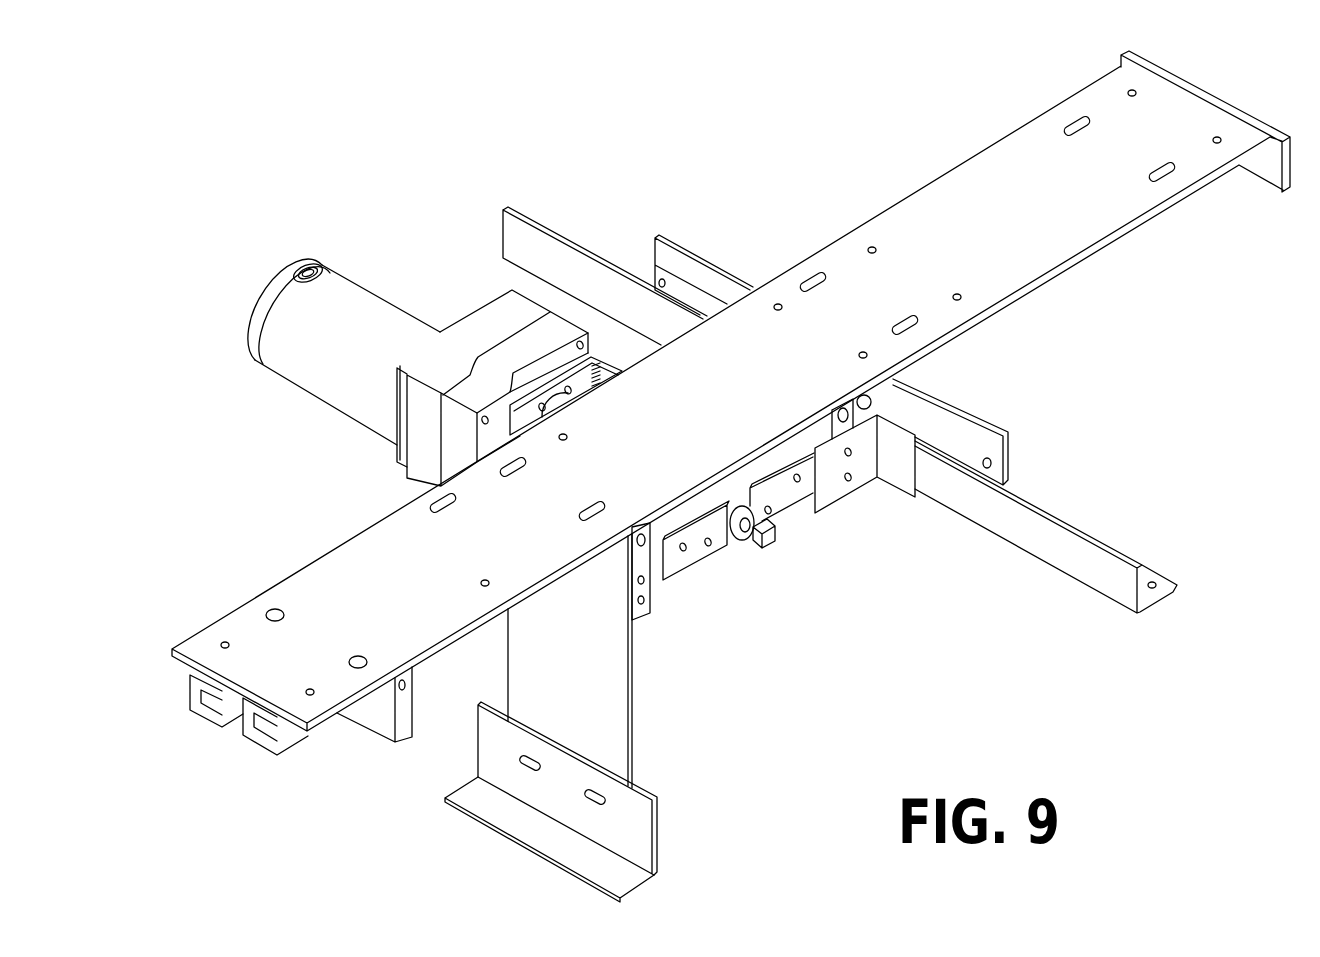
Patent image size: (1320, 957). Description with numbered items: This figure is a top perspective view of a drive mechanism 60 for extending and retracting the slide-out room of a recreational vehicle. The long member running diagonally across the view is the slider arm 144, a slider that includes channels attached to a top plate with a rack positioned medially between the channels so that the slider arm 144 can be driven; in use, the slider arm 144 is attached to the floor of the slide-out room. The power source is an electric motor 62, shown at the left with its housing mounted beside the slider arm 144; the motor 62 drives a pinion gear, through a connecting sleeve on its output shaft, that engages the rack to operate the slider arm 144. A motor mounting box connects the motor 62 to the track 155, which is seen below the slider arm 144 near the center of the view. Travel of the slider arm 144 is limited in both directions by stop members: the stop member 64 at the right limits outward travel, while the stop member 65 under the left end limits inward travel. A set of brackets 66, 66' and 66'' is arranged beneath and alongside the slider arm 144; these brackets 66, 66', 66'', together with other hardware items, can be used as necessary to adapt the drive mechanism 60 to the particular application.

The drive mechanism 60 is at (390, 198).
The electric motor 62 is at (298, 388).
The stop member 64 is at (985, 422).
The stop member 65 is at (387, 738).
The bracket 66 is at (865, 480).
The bracket 66' is at (607, 661).
The bracket 66'' is at (599, 802).
The slider arm 144 is at (1017, 239).
The track 155 is at (661, 586).